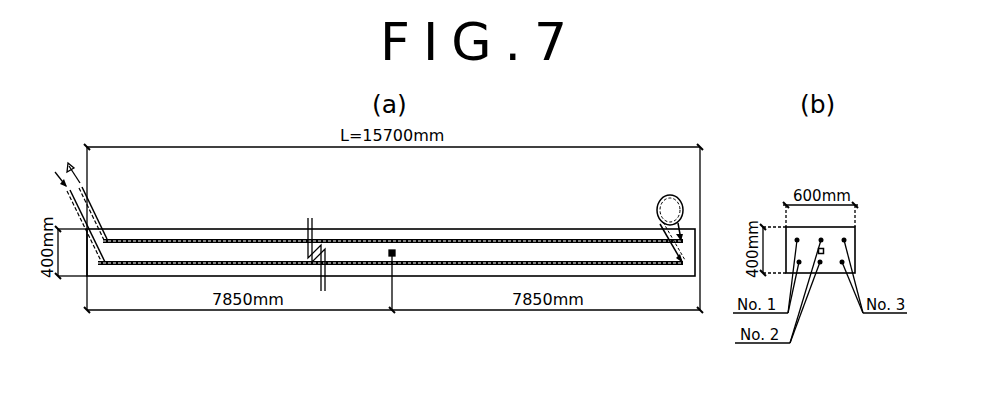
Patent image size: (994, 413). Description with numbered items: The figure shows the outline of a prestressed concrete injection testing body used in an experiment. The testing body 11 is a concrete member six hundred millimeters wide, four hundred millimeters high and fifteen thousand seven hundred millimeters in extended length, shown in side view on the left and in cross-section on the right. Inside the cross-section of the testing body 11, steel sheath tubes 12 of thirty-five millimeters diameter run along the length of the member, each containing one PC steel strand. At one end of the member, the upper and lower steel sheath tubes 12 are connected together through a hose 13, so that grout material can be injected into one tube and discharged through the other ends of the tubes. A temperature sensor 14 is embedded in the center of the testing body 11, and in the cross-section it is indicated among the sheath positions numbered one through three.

The testing body 11 is at (175, 233).
The steel sheath tube 12 is at (470, 240).
The hose 13 is at (678, 196).
The temperature sensor 14 is at (393, 249).